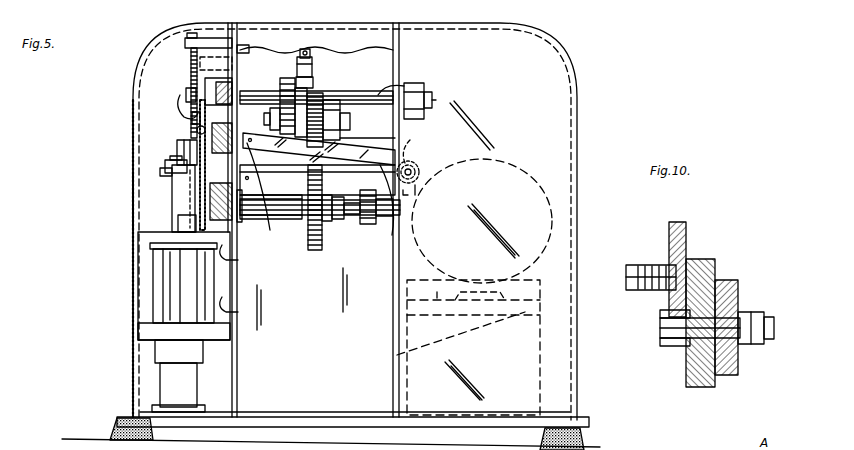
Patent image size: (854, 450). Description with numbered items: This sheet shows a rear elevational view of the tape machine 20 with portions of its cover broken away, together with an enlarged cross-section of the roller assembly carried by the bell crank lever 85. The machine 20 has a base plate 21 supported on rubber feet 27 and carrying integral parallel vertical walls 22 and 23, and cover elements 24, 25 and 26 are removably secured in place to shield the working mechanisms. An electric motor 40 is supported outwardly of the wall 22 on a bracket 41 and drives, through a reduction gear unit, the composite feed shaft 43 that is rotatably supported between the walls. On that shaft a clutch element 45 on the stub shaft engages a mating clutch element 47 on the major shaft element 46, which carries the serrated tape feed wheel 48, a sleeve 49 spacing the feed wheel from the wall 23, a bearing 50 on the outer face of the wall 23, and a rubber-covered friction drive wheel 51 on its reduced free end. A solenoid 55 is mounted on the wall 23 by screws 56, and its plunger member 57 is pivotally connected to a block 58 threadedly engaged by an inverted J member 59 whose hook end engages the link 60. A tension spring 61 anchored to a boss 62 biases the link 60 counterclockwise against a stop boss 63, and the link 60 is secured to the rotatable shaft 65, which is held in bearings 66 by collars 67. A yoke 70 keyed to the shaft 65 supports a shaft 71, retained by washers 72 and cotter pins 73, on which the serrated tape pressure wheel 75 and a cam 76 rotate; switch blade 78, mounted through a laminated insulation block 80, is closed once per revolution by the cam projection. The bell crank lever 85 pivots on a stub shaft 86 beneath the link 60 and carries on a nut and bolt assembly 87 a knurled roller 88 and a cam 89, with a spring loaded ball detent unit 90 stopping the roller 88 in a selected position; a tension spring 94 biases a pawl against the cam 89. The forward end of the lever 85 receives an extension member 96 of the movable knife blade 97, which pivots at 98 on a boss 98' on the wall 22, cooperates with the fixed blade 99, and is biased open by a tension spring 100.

In FIG. 5, the machine 20 is at (90, 297).
In FIG. 5, the base plate 21 is at (515, 418).
In FIG. 5, the vertical wall 22 is at (400, 70).
In FIG. 5, the vertical wall 23 is at (237, 378).
In FIG. 5, the cover element 24 is at (552, 103).
In FIG. 5, the cover element 25 is at (378, 46).
In FIG. 5, the cover element 26 is at (131, 191).
In FIG. 5, the rubber feet 27 is at (115, 424).
In FIG. 5, the electric motor 40 is at (541, 193).
In FIG. 5, the bracket 41 is at (490, 318).
In FIG. 5, the composite feed shaft 43 is at (346, 228).
In FIG. 5, the clutch element 45 is at (405, 208).
In FIG. 5, the major shaft element 46 is at (338, 222).
In FIG. 5, the clutch element 47 is at (370, 225).
In FIG. 5, the tape feed wheel 48 is at (314, 250).
In FIG. 5, the sleeve 49 is at (302, 225).
In FIG. 5, the bearing 50 is at (215, 212).
In FIG. 5, the friction drive wheel 51 is at (237, 224).
In FIG. 5, the solenoid 55 is at (165, 271).
In FIG. 5, the screws 56 is at (226, 268).
In FIG. 5, the plunger member 57 is at (178, 219).
In FIG. 5, the block 58 is at (177, 150).
In FIG. 5, the inverted J member 59 is at (180, 103).
In FIG. 5, the link 60 is at (186, 90).
In FIG. 5, the tension spring 61 is at (191, 60).
In FIG. 5, the boss 62 is at (185, 42).
In FIG. 5, the stop boss 63 is at (212, 68).
In FIG. 5, the rotatable shaft 65 is at (404, 83).
In FIG. 5, the bearings 66 is at (228, 86).
In FIG. 5, the collars 67 is at (434, 97).
In FIG. 5, the yoke 70 is at (326, 82).
In FIG. 5, the shaft 71 is at (351, 122).
In FIG. 5, the washers 72 is at (340, 103).
In FIG. 5, the cotter pins 73 is at (386, 137).
In FIG. 5, the tape pressure wheel 75 is at (285, 160).
In FIG. 5, the cam 76 is at (297, 107).
In FIG. 5, the switch blade 78 is at (310, 74).
In FIG. 5, the laminated insulation block 80 is at (295, 50).
In FIG. 5, the stub shaft 86 is at (180, 157).
In FIG. 5, the nut and bolt assembly 87 is at (158, 174).
In FIG. 10, the nut and bolt assembly 87 is at (766, 308).
In FIG. 5, the tension spring 94 is at (192, 118).
In FIG. 5, the extension member 96 is at (265, 217).
In FIG. 5, the knife blade 97 is at (352, 172).
In FIG. 5, the pivot 98 is at (437, 178).
In FIG. 5, the boss 98' is at (436, 151).
In FIG. 5, the fixed blade 99 is at (382, 218).
In FIG. 5, the tension spring 100 is at (197, 128).
In FIG. 10, the bell crank lever 85 is at (688, 240).
In FIG. 10, the roller 88 is at (716, 270).
In FIG. 10, the cam 89 is at (740, 292).
In FIG. 10, the spring loaded ball detent unit 90 is at (656, 264).